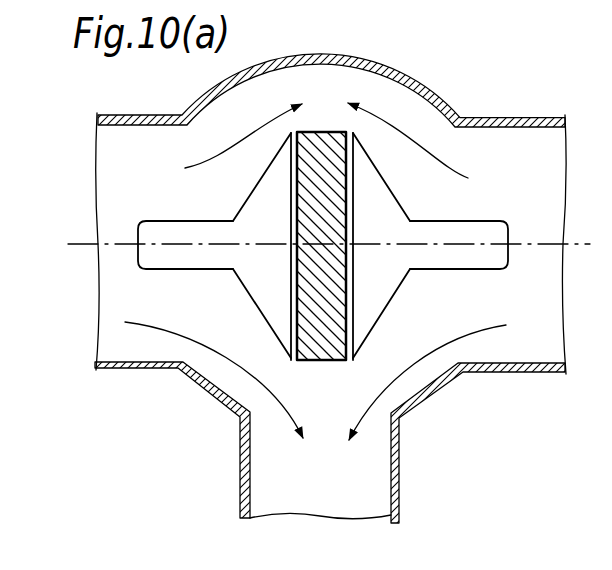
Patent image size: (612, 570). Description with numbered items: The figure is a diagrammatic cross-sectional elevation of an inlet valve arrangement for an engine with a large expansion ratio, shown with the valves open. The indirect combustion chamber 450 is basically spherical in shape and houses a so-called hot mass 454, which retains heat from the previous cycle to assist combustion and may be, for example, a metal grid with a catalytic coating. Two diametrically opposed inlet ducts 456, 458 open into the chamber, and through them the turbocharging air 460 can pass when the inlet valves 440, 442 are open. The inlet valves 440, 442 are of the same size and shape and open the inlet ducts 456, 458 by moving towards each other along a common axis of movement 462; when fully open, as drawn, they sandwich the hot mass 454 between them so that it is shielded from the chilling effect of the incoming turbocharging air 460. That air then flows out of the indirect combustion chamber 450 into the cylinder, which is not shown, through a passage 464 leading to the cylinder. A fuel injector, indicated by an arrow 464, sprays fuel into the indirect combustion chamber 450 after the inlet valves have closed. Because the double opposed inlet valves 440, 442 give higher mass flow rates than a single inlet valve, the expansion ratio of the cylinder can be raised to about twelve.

The inlet valve 440 is at (248, 253).
The inlet valve 442 is at (413, 271).
The indirect combustion chamber 450 is at (454, 397).
The hot mass 454 is at (323, 132).
The inlet duct 456 is at (163, 172).
The inlet duct 458 is at (536, 173).
The turbocharging air 460 is at (319, 271).
The common axis of movement 462 is at (98, 245).
The passage 464 is at (406, 119).